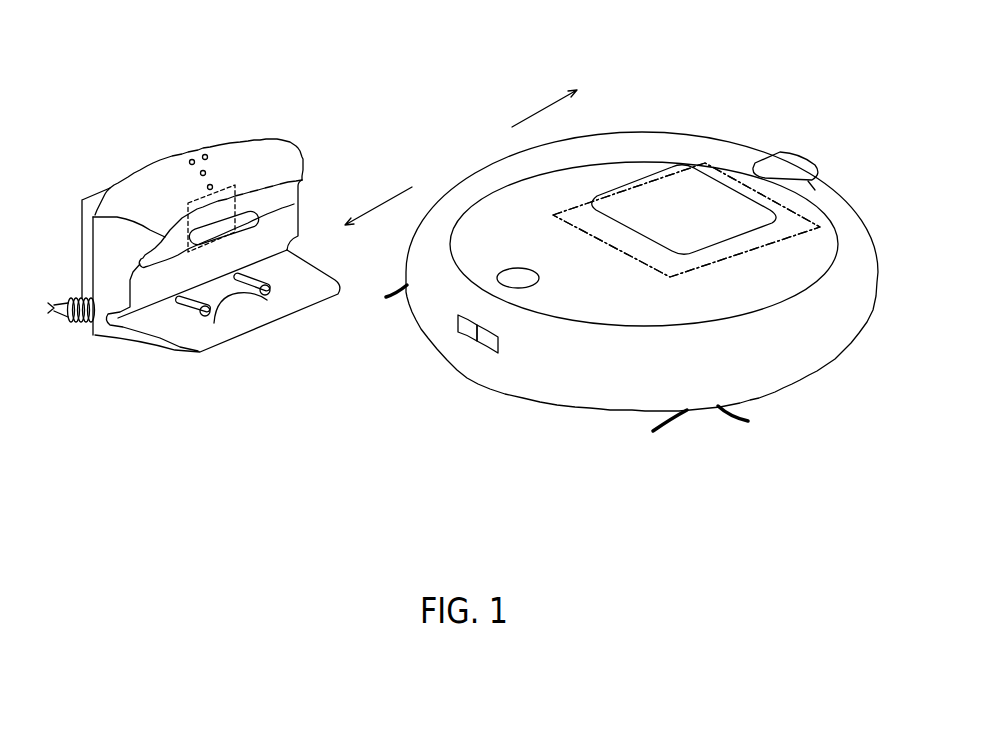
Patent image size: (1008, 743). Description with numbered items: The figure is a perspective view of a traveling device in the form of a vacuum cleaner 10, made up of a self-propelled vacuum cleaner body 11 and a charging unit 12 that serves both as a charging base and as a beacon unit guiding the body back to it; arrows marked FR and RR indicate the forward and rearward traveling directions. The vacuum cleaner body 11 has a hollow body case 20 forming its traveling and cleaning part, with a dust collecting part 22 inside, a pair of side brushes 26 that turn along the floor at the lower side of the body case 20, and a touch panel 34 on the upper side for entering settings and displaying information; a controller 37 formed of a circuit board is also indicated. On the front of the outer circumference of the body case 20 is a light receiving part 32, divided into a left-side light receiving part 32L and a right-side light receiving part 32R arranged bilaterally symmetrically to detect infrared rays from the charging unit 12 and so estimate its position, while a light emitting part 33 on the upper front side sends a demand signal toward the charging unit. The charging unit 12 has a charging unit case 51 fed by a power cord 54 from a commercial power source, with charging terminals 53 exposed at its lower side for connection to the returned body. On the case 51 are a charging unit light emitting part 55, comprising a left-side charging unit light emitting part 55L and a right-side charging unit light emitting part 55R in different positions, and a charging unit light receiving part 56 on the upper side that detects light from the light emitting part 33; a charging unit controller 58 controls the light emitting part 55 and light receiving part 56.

The vacuum cleaner 10 is at (636, 35).
The vacuum cleaner body 11 is at (694, 85).
The charging unit 12 is at (283, 109).
The body case 20 is at (817, 192).
The dust collecting part 22 is at (828, 223).
The side brush 26 is at (398, 317).
The light receiving part 32 is at (500, 428).
The right-side light receiving part 32R is at (465, 336).
The left-side light receiving part 32L is at (489, 345).
The light emitting part 33 is at (516, 268).
The touch panel 34 is at (737, 243).
The controller 37 is at (717, 263).
The charging unit case 51 is at (300, 153).
The charging terminals 53 is at (208, 318).
The power cord 54 is at (56, 313).
The charging unit light emitting part 55 is at (212, 101).
The left-side charging unit light emitting part 55L is at (190, 160).
The right-side charging unit light emitting part 55R is at (204, 154).
The charging unit light receiving part 56 is at (212, 185).
The charging unit controller 58 is at (197, 200).